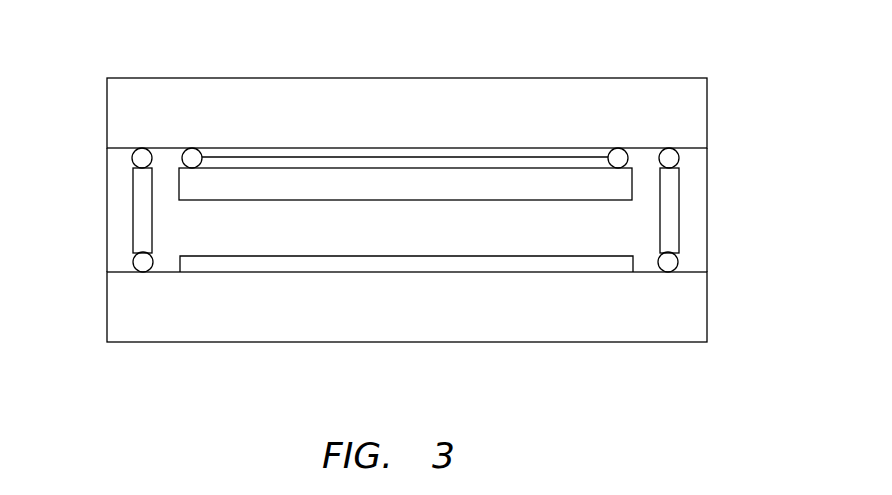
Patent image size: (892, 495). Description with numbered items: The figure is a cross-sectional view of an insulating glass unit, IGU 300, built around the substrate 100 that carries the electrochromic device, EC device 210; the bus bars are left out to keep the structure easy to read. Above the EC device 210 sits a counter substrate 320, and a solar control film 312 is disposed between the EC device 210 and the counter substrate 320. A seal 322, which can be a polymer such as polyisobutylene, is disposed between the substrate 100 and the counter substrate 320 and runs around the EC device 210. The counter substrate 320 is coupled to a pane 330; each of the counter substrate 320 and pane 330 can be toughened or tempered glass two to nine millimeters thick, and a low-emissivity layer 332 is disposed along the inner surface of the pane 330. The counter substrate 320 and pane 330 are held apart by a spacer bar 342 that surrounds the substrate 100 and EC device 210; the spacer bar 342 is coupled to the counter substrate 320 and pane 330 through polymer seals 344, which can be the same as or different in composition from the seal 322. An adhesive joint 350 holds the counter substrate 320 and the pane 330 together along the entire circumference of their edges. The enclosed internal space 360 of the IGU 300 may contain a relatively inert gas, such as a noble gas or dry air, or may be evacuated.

The insulating glass unit 300 is at (750, 56).
The counter substrate 320 is at (455, 122).
The pane 330 is at (388, 318).
The adhesive joint 350 is at (115, 222).
The internal space 360 is at (388, 240).
The spacer bar 342 is at (145, 235).
The ball / solder connection 344 is at (140, 150).
The seal 322 is at (191, 150).
The solar control film 312 is at (296, 152).
The substrate 100 is at (388, 197).
The electrochromic device 210 is at (267, 164).
The low-emissivity layer 332 is at (483, 267).